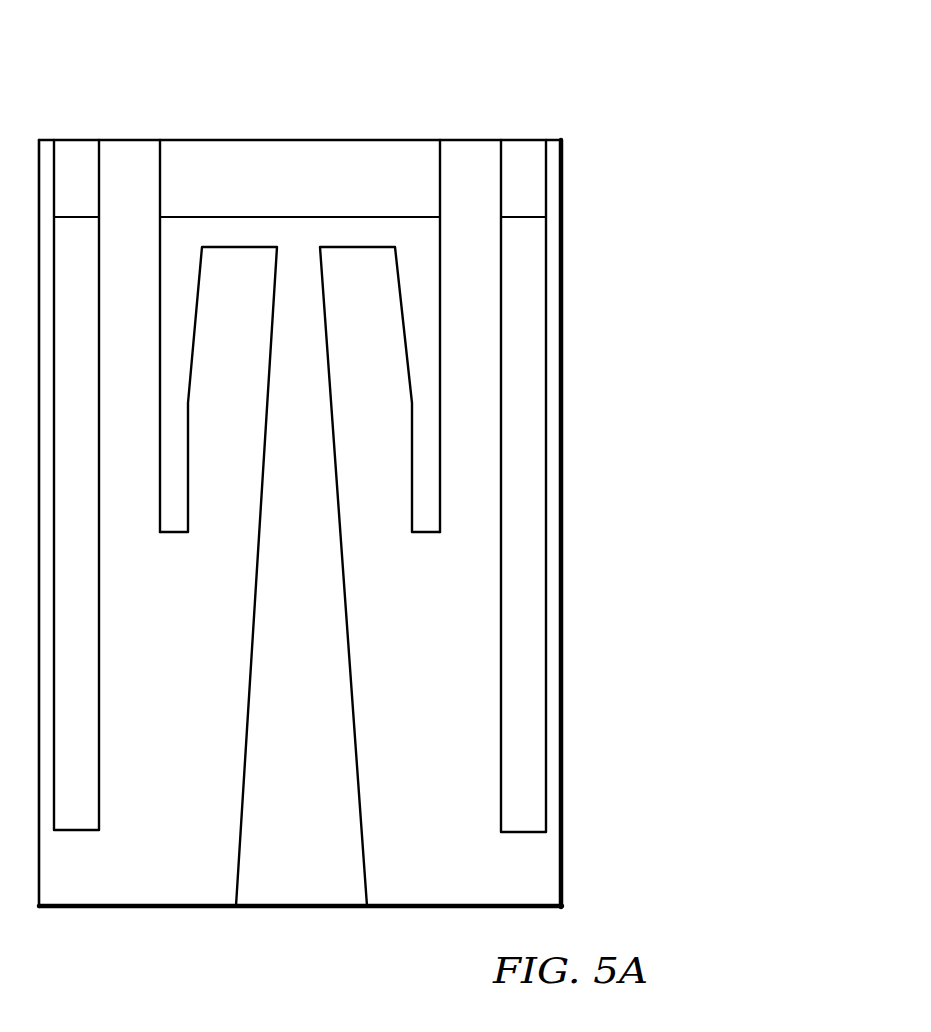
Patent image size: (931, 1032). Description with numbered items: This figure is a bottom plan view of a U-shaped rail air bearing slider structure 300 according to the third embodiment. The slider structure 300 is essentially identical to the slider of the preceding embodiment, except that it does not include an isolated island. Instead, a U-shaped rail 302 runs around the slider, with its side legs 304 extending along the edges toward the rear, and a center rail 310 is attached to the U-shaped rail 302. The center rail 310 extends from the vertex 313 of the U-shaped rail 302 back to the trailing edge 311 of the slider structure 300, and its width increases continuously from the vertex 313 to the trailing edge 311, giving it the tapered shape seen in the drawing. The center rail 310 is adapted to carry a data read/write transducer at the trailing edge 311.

The U-shaped rail air bearing slider structure 300 is at (505, 88).
The U-shaped rail 302 is at (412, 227).
The side slot 304 is at (520, 583).
The center rail 310 is at (268, 743).
The trailing edge 311 is at (565, 900).
The vertex 313 is at (292, 250).